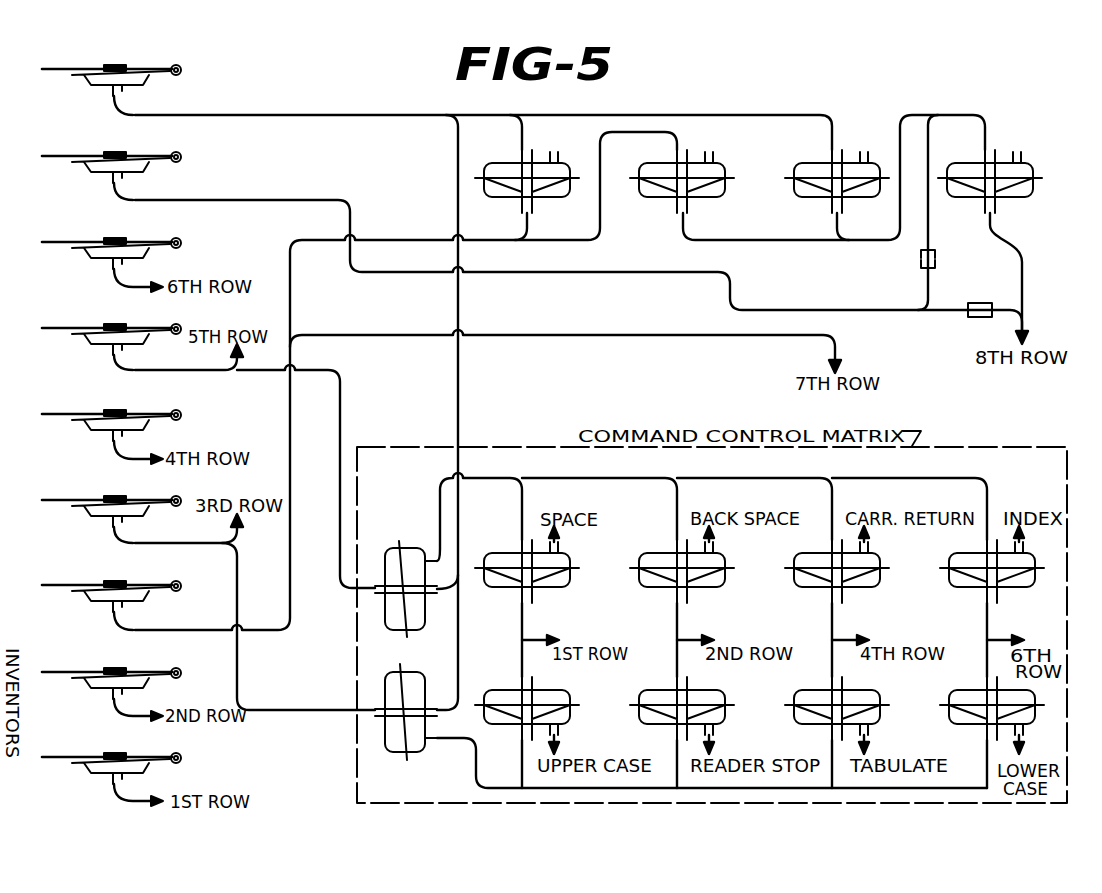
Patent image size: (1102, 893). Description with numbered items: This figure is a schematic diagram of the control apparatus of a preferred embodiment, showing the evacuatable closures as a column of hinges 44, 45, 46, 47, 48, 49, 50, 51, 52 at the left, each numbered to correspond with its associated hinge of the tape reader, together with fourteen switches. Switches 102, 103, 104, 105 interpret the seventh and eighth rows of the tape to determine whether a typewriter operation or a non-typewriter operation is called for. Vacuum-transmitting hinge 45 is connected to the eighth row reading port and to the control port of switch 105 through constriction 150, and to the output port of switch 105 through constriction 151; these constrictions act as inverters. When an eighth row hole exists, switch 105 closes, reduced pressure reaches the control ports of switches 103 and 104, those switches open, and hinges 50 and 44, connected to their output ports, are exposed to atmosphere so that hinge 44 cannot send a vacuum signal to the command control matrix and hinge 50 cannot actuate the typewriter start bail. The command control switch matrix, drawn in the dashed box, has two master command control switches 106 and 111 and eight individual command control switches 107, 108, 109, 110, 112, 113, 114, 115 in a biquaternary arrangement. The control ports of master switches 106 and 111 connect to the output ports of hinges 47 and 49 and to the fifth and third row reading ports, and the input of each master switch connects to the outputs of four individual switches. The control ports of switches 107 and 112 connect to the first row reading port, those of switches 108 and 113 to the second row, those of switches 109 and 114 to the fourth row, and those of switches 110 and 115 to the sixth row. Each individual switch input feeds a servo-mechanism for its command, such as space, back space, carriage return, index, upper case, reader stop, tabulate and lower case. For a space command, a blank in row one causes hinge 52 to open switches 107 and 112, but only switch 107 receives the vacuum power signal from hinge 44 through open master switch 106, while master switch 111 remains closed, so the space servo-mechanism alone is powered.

The hinge 44 is at (57, 74).
The hinge 45 is at (69, 161).
The hinge 46 is at (72, 247).
The hinge 47 is at (69, 333).
The hinge 48 is at (72, 419).
The hinge 49 is at (72, 505).
The hinge 50 is at (64, 590).
The hinge 51 is at (75, 677).
The hinge 52 is at (65, 762).
The switch 102 is at (490, 193).
The switch 103 is at (643, 194).
The switch 104 is at (795, 193).
The switch 105 is at (953, 194).
The master command control switch 106 is at (392, 548).
The individual command control switch 107 is at (508, 541).
The individual command control switch 108 is at (652, 545).
The individual command control switch 109 is at (817, 545).
The individual command control switch 110 is at (966, 548).
The master command control switch 111 is at (398, 655).
The individual command control switch 112 is at (504, 684).
The individual command control switch 113 is at (648, 694).
The individual command control switch 114 is at (806, 696).
The individual command control switch 115 is at (968, 696).
The constriction 150 is at (994, 283).
The constriction 151 is at (920, 262).